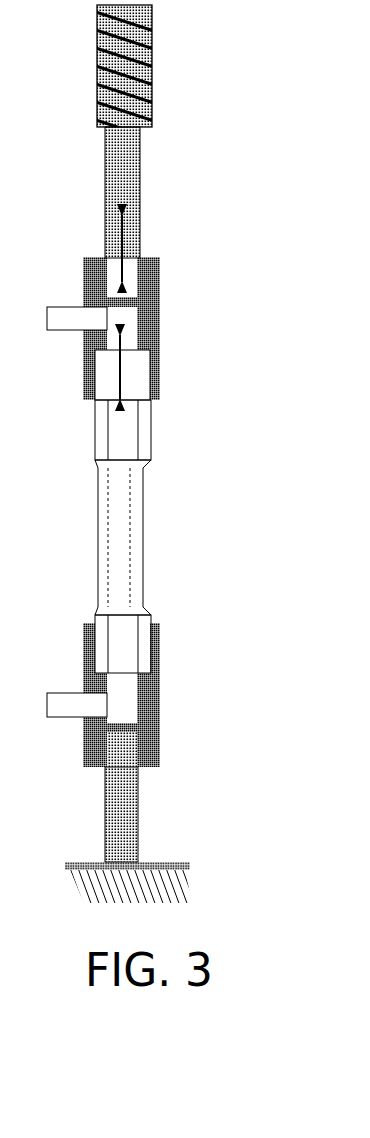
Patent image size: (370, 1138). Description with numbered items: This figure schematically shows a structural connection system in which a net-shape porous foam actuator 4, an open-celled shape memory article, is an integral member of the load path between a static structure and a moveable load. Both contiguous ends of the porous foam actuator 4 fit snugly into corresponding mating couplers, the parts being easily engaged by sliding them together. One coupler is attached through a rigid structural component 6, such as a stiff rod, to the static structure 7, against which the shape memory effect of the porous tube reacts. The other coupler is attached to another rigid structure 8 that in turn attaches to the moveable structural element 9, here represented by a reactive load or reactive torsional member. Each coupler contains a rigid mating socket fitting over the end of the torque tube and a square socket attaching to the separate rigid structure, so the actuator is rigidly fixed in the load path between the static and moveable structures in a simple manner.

The porous foam actuator 4 is at (163, 516).
The rigid structural component 6 is at (142, 812).
The static structure 7 is at (190, 876).
The rigid structure 8 is at (155, 169).
The moveable structural element 9 is at (174, 80).